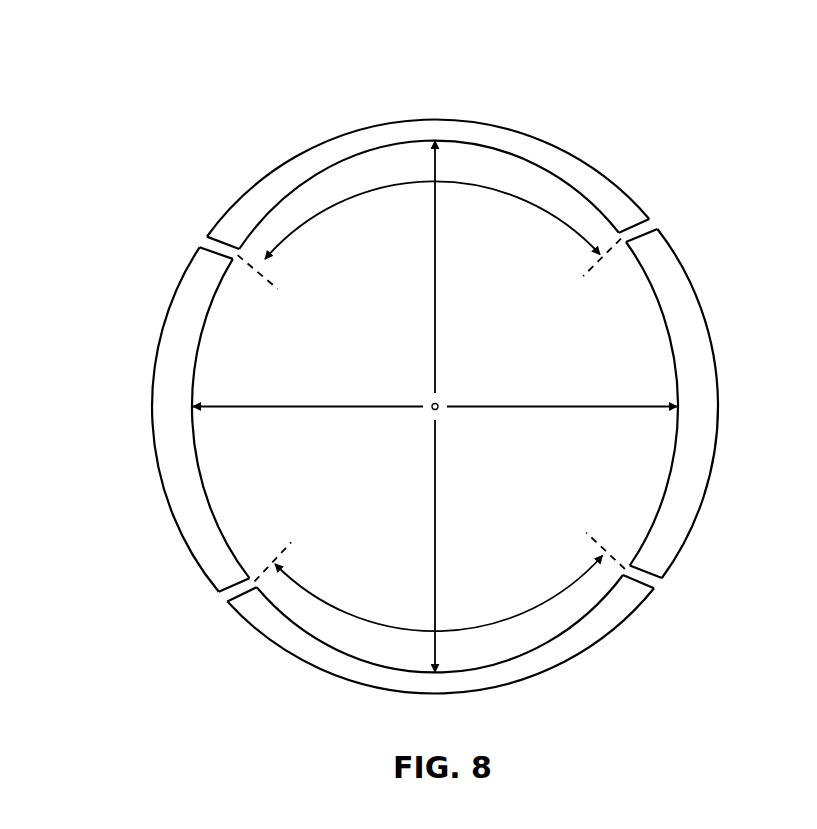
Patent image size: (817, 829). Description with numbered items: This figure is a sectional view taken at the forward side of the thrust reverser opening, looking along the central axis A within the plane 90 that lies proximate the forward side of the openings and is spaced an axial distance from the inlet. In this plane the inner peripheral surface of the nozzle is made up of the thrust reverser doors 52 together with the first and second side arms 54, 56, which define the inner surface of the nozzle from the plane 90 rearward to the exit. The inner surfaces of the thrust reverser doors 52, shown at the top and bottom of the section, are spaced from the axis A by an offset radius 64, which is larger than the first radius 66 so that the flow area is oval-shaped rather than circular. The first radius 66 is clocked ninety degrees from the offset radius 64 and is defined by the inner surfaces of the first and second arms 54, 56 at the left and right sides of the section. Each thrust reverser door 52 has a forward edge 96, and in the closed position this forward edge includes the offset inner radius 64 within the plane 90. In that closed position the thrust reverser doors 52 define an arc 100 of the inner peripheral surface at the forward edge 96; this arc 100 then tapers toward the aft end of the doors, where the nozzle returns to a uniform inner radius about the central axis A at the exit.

The plane 90 is at (261, 75).
The thrust reverser doors 52 is at (547, 135).
The first side arm 54 is at (165, 447).
The second side arm 56 is at (710, 404).
The forward edge 96 is at (460, 127).
The arc 100 is at (312, 225).
The offset radius 64 is at (437, 325).
The first radius 66 is at (290, 408).
The central axis A is at (432, 410).